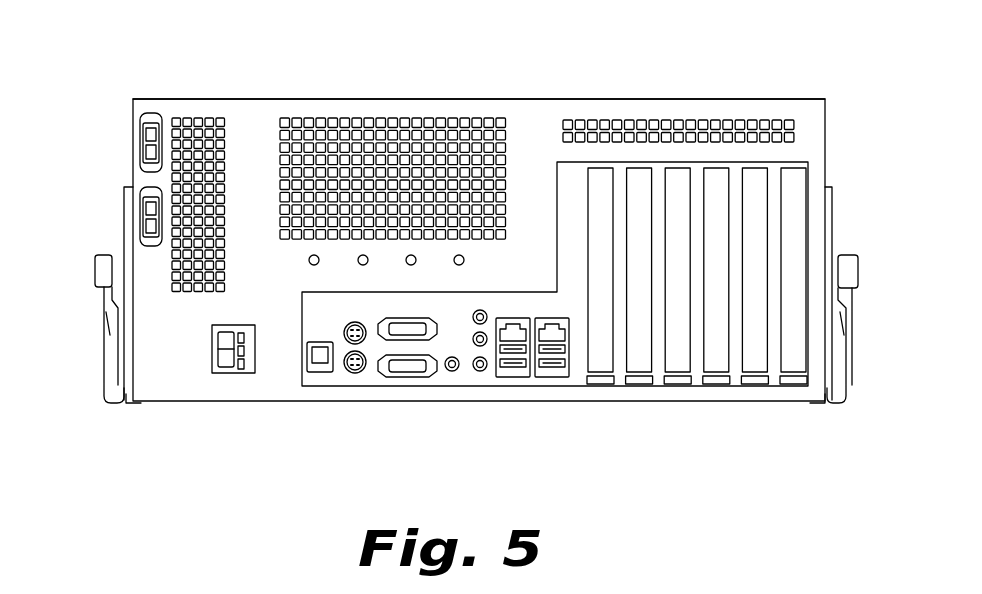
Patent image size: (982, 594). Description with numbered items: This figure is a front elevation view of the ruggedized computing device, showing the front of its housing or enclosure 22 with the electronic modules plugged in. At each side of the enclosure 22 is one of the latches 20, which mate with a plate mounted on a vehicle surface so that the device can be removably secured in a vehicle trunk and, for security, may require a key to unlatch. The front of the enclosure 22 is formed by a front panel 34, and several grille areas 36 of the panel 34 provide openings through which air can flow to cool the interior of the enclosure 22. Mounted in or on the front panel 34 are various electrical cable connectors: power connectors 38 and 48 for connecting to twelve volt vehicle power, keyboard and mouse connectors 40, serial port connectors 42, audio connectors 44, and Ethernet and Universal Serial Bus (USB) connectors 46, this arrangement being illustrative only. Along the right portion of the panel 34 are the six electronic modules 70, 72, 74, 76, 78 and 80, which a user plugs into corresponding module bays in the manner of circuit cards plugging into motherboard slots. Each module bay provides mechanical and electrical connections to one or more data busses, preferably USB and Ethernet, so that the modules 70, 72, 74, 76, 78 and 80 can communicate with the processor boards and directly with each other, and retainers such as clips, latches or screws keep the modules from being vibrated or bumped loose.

The latches 20 is at (97, 310).
The housing or enclosure 22 is at (539, 98).
The front panel 34 is at (245, 99).
The grille areas 36 is at (200, 120).
The power connector 38 is at (222, 373).
The keyboard and mouse connectors 40 is at (350, 372).
The serial port connectors 42 is at (404, 377).
The audio connectors 44 is at (452, 371).
The Ethernet and Universal Serial Bus (USB) connectors 46 is at (513, 386).
The power connector 48 is at (140, 207).
The electronic module 70 is at (600, 367).
The electronic module 72 is at (637, 367).
The electronic module 74 is at (677, 367).
The electronic module 76 is at (715, 367).
The electronic module 78 is at (754, 367).
The electronic module 80 is at (791, 367).